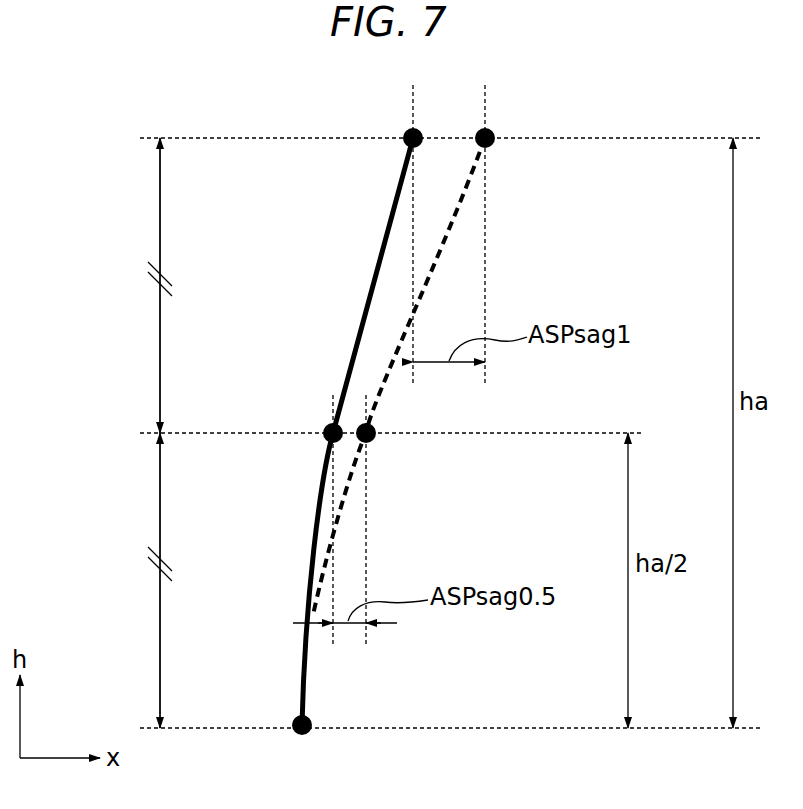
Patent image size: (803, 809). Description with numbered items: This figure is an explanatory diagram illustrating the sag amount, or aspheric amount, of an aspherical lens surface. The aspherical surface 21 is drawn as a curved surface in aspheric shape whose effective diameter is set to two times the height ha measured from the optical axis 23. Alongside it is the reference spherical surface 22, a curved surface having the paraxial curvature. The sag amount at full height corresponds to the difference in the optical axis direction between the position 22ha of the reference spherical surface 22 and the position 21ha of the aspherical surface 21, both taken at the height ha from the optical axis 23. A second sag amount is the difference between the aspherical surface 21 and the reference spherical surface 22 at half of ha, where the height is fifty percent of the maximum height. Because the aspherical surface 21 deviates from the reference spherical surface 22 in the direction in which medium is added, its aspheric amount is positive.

The aspherical surface 21 is at (383, 242).
The position of the aspherical surface at height ha 21ha is at (405, 133).
The reference spherical surface 22 is at (462, 185).
The position of the reference spherical surface at height ha 22ha is at (495, 133).
The optical axis 23 is at (467, 728).